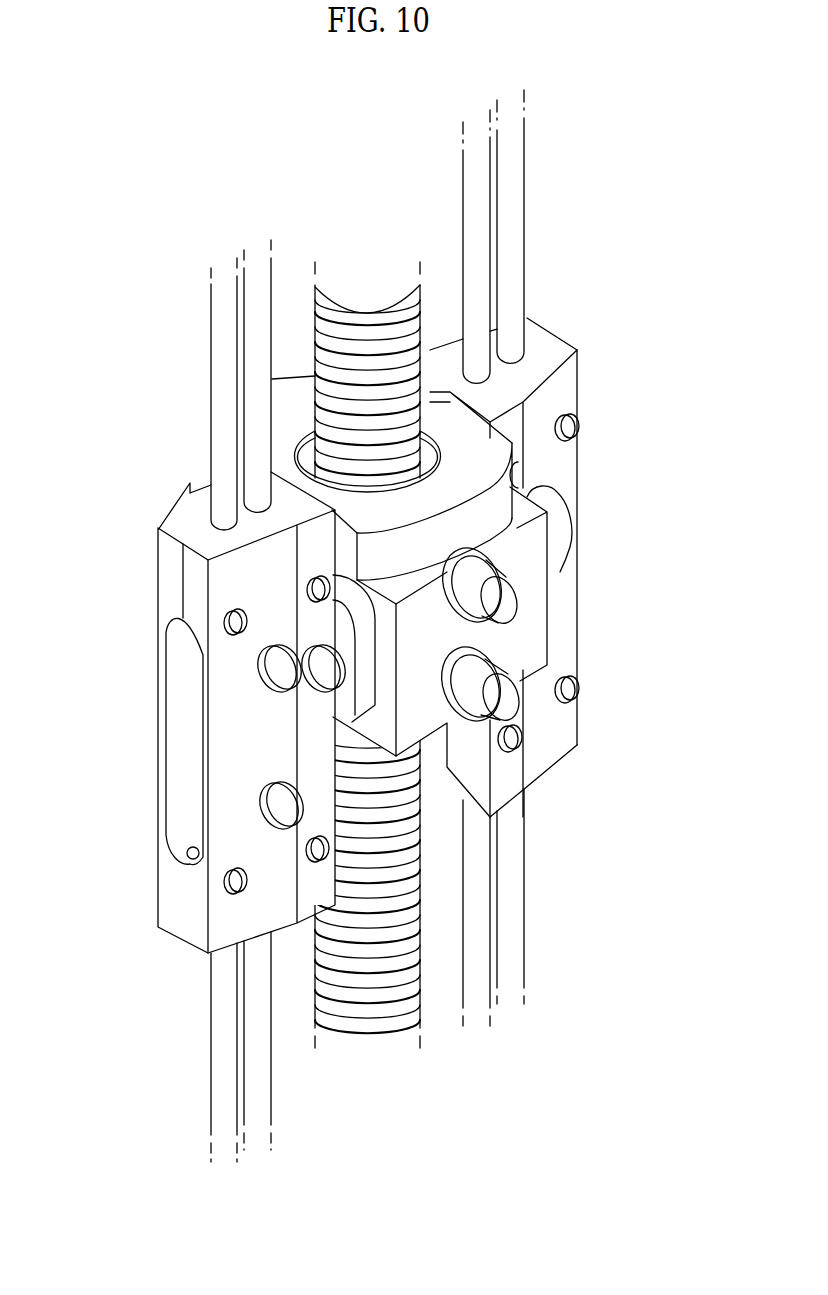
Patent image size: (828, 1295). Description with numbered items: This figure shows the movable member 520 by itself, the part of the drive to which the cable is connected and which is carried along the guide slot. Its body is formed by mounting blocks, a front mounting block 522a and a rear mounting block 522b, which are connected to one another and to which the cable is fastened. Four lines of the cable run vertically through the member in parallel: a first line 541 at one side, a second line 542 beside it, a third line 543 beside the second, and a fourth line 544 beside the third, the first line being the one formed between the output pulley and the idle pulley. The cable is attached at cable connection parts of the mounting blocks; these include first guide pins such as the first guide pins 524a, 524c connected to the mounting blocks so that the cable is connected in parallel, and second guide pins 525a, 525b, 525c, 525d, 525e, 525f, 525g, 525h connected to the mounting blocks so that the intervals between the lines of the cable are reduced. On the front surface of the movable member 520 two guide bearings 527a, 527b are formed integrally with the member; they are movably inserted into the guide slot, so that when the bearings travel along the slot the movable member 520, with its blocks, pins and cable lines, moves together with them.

The movable member 520 is at (633, 540).
The front mounting block 522a is at (205, 545).
The rear mounting block 522b is at (180, 528).
The first guide pin 524a is at (262, 668).
The first guide pin 524c is at (265, 808).
The second guide pin 525a is at (224, 618).
The second guide pin 525b is at (307, 585).
The second guide pin 525c is at (520, 472).
The second guide pin 525d is at (580, 427).
The second guide pin 525e is at (226, 878).
The second guide pin 525f is at (316, 862).
The second guide pin 525g is at (518, 742).
The second guide pin 525h is at (576, 690).
The guide bearing 527a is at (513, 593).
The guide bearing 527b is at (508, 677).
The first line 541 is at (218, 405).
The second line 542 is at (260, 350).
The third line 543 is at (477, 187).
The fourth line 544 is at (520, 238).